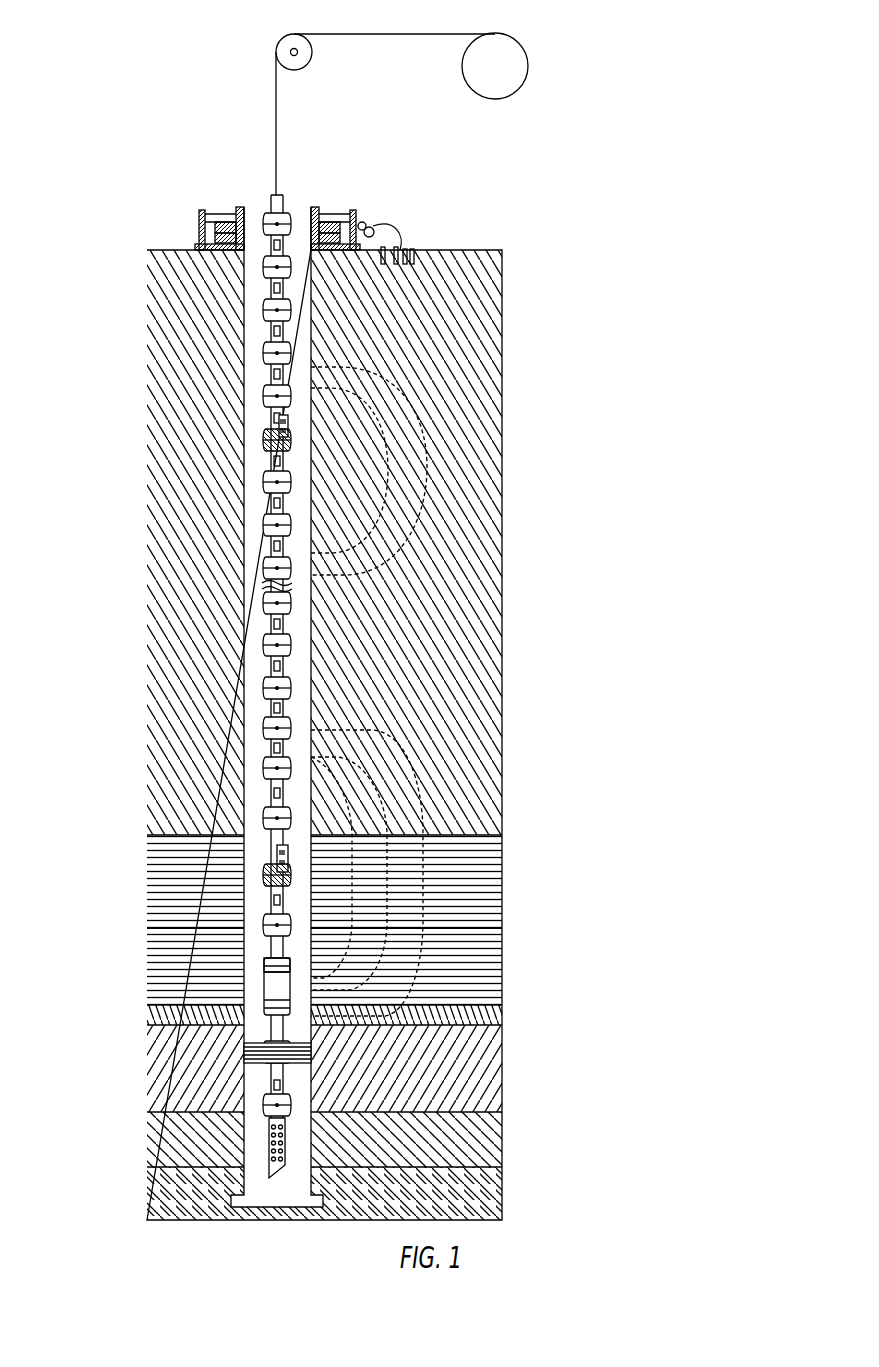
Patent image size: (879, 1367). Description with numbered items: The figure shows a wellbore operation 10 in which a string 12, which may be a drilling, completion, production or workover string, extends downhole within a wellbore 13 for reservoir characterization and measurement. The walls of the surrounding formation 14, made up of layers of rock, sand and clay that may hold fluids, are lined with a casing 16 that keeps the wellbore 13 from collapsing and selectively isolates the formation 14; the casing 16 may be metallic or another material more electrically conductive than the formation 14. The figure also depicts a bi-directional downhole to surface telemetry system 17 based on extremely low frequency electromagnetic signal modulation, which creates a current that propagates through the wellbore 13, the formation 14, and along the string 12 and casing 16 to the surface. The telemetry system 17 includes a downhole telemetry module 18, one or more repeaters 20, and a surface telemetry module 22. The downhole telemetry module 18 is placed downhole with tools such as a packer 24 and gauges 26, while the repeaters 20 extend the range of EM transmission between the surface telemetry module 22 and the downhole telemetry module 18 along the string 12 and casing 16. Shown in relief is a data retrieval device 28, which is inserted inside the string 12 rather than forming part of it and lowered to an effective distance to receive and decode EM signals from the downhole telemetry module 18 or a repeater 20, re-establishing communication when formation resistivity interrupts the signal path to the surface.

The wellbore operation 10 is at (105, 316).
The string 12 is at (289, 388).
The wellbore 13 is at (240, 278).
The formation 14 is at (463, 880).
The casing 16 is at (306, 499).
The downhole to surface telemetry system 17 is at (253, 668).
The downhole telemetry module 18 is at (263, 968).
The repeaters 20 is at (270, 417).
The surface telemetry module 22 is at (398, 213).
The packer 24 is at (242, 1052).
The gauges 26 is at (263, 990).
The data retrieval device 28 is at (282, 797).